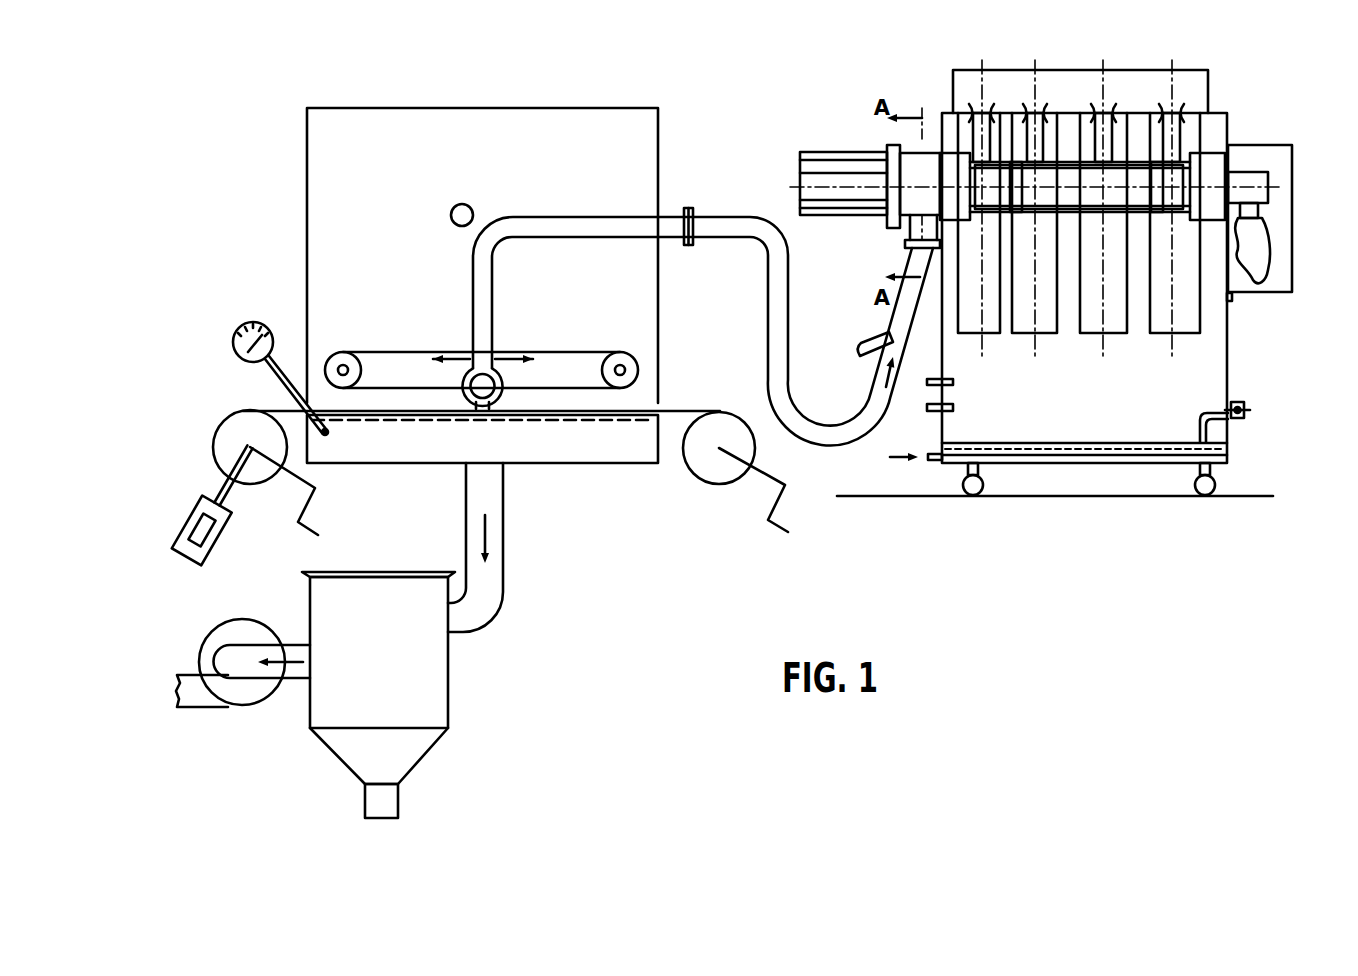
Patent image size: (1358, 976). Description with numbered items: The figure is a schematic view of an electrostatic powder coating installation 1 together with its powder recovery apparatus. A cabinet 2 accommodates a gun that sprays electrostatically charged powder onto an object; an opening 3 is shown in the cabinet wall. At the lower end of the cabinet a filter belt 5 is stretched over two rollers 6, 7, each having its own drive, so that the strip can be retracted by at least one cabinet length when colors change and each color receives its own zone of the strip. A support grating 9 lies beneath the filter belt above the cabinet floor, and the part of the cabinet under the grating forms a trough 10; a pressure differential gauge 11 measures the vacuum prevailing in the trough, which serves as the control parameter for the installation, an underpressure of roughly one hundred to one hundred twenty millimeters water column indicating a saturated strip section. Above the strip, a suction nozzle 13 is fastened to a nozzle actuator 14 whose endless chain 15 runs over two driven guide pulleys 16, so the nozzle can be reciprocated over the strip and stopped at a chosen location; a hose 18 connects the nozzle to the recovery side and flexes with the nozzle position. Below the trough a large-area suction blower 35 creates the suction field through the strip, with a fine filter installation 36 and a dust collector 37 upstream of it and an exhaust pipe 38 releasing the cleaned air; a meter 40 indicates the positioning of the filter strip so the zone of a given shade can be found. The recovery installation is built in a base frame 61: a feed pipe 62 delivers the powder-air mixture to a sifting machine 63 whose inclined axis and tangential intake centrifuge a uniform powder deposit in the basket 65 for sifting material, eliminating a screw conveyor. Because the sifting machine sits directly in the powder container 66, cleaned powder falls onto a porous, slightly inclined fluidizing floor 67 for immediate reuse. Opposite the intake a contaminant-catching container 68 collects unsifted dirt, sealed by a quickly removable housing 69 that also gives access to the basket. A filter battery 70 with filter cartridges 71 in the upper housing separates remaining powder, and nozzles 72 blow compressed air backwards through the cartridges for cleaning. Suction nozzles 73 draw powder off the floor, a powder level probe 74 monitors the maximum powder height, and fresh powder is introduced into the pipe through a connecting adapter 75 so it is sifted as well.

The electrostatic powder coating installation 1 is at (598, 84).
The cabinet 2 is at (397, 123).
The opening 3 is at (465, 205).
The filter belt 5 is at (690, 410).
The roller 6 is at (232, 428).
The roller 7 is at (729, 432).
The support grating 9 is at (578, 422).
The trough 10 is at (628, 455).
The pressure differential gauge 11 is at (248, 321).
The suction nozzle 13 is at (470, 373).
The nozzle actuator 14 is at (382, 329).
The endless chain 15 is at (557, 350).
The guide pulleys 16 is at (343, 358).
The hose 18 is at (583, 222).
The suction blower 35 is at (256, 699).
The fine filter installation 36 is at (437, 692).
The dust collector 37 is at (388, 798).
The exhaust pipe 38 is at (196, 700).
The meter 40 is at (213, 535).
The base frame 61 is at (1230, 350).
The feed pipe 62 is at (870, 413).
The sifting machine 63 is at (847, 207).
The basket for sifting material 65 is at (990, 162).
The powder container 66 is at (1062, 413).
The fluidizing floor 67 is at (963, 448).
The contaminant-catching container 68 is at (1262, 248).
The housing 69 is at (1267, 143).
The filter battery 70 is at (1020, 113).
The filter cartridges 71 is at (1157, 127).
The nozzles 72 is at (1099, 94).
The suction nozzles 73 is at (1243, 413).
The powder level probe 74 is at (927, 407).
The connecting adapter 75 is at (868, 337).